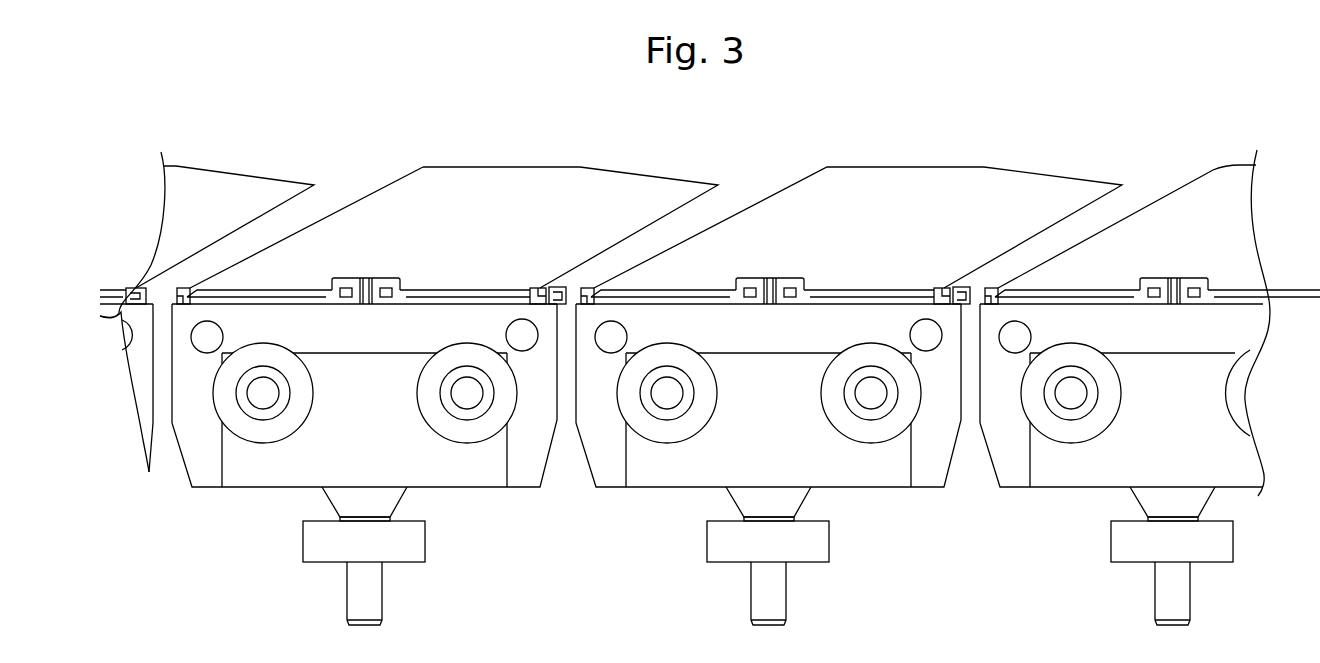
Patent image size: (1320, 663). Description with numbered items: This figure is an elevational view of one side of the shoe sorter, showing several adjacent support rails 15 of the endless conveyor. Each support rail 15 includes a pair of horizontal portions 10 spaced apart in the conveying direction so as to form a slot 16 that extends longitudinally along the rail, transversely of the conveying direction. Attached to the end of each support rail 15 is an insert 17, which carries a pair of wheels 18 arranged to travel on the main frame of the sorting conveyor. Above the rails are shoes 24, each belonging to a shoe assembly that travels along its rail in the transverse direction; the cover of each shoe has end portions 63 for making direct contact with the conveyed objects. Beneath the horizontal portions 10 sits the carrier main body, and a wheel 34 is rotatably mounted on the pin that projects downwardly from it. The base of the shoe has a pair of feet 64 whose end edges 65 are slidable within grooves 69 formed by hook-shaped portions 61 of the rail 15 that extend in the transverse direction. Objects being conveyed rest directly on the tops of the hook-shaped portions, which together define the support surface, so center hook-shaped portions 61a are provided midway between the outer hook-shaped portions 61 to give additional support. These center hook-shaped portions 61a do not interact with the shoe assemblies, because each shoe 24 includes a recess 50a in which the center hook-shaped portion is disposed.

The horizontal portions 10 is at (286, 290).
The support rail 15 is at (595, 447).
The slot 16 is at (372, 279).
The insert 17 is at (670, 512).
The wheels 18 is at (700, 420).
The shoe 24 is at (420, 164).
The wheel 34 is at (828, 546).
The recess 50a is at (340, 279).
The hook-shaped portions 61 is at (188, 288).
The center hook-shaped portions 61a is at (396, 281).
The end portions 63 is at (487, 201).
The feet 64 is at (315, 304).
The end edges 65 is at (183, 315).
The grooves 69 is at (125, 298).